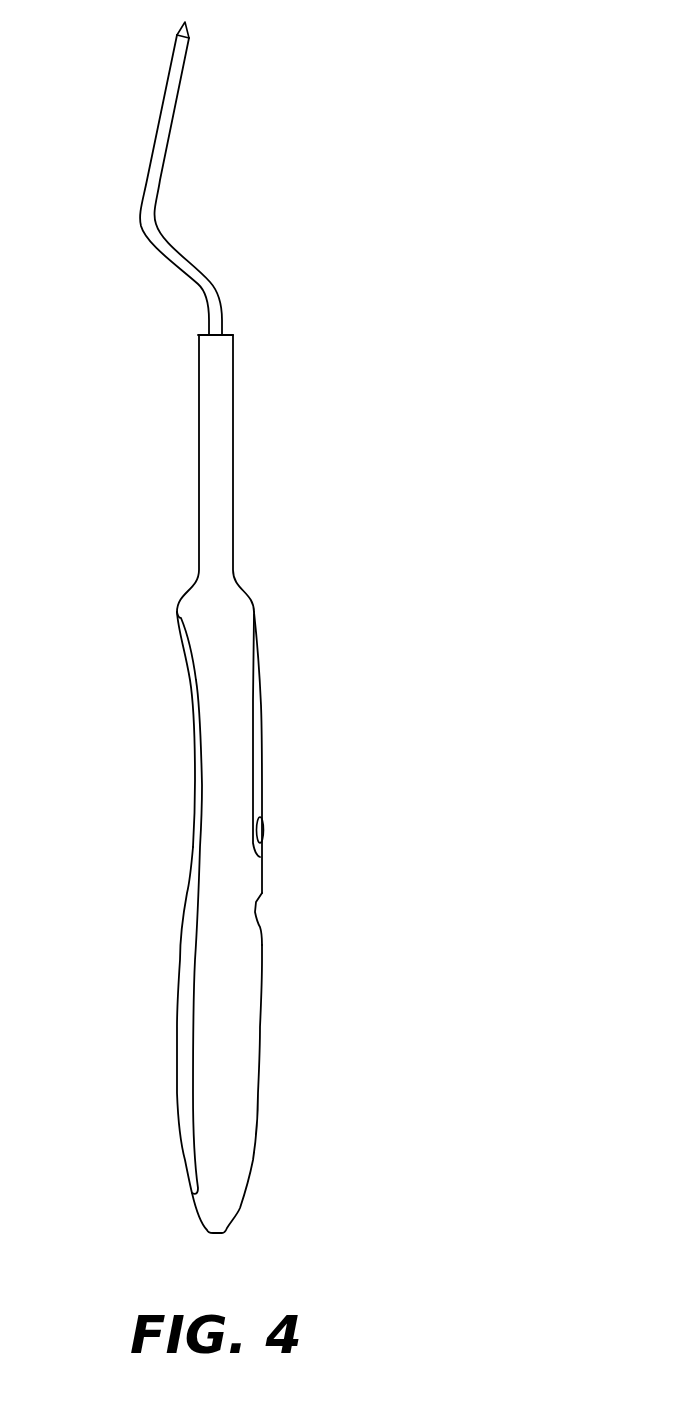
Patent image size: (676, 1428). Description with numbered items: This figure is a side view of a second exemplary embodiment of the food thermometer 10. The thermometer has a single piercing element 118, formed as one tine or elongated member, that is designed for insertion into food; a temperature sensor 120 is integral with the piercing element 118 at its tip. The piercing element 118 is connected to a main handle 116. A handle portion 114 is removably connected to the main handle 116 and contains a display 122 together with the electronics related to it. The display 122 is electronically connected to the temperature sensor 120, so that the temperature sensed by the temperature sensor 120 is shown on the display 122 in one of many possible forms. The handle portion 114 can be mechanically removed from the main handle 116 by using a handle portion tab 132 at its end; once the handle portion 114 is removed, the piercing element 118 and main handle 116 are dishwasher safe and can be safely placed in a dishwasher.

The food thermometer 10 is at (450, 360).
The handle portion 114 is at (178, 632).
The main handle 116 is at (227, 470).
The piercing element 118 is at (160, 165).
The temperature sensor 120 is at (188, 33).
The display 122 is at (262, 763).
The handle portion tab 132 is at (207, 1215).